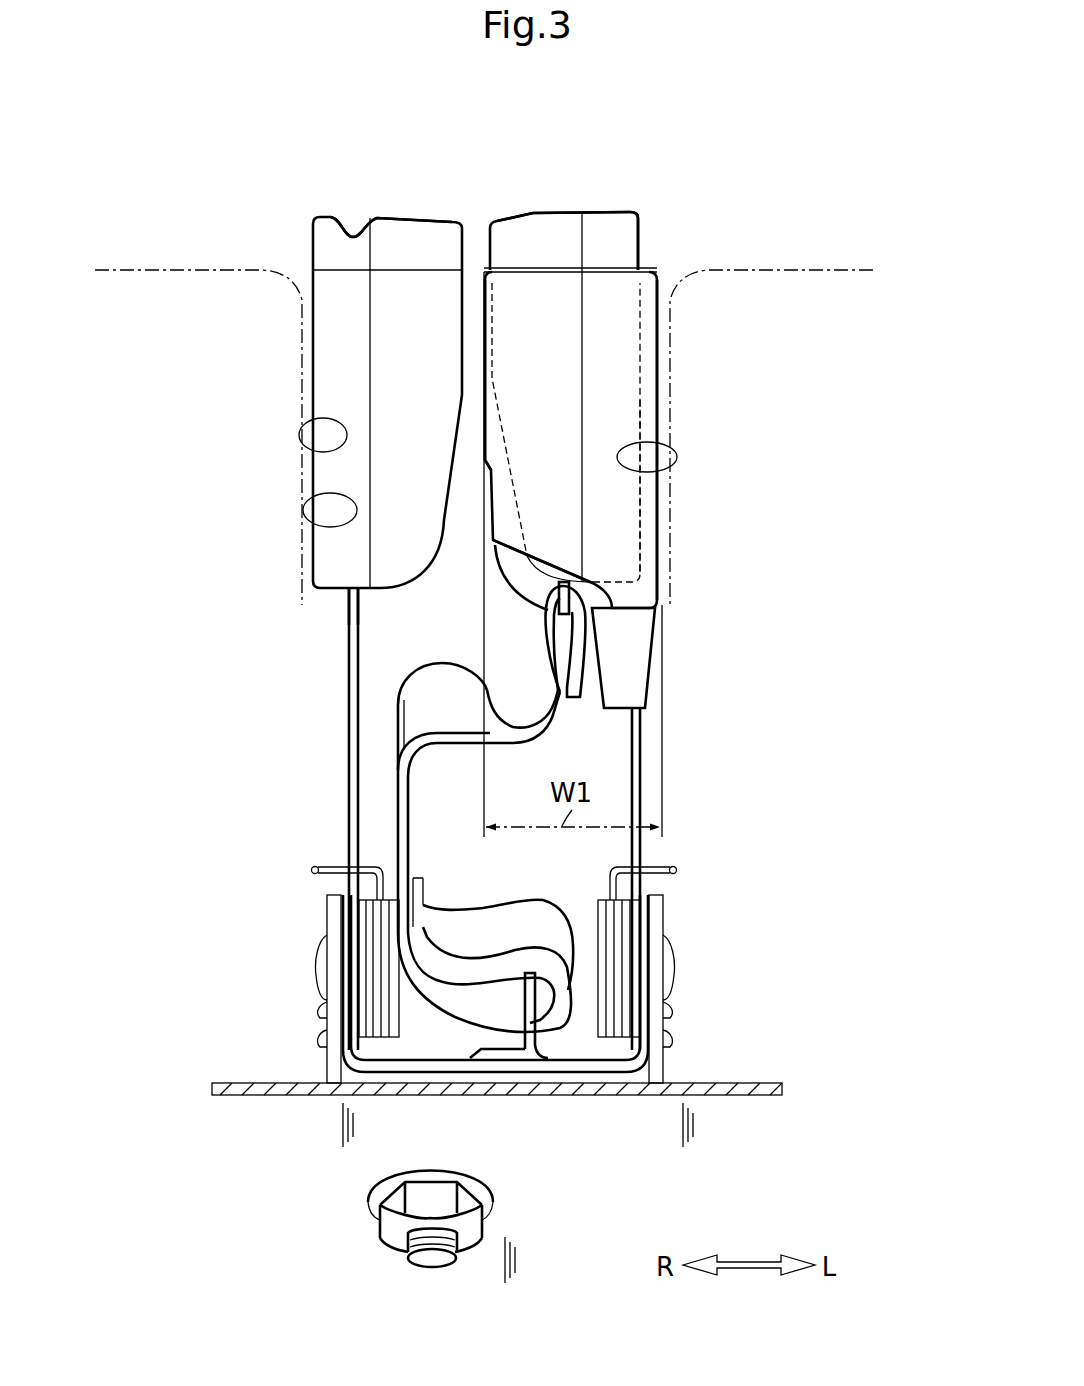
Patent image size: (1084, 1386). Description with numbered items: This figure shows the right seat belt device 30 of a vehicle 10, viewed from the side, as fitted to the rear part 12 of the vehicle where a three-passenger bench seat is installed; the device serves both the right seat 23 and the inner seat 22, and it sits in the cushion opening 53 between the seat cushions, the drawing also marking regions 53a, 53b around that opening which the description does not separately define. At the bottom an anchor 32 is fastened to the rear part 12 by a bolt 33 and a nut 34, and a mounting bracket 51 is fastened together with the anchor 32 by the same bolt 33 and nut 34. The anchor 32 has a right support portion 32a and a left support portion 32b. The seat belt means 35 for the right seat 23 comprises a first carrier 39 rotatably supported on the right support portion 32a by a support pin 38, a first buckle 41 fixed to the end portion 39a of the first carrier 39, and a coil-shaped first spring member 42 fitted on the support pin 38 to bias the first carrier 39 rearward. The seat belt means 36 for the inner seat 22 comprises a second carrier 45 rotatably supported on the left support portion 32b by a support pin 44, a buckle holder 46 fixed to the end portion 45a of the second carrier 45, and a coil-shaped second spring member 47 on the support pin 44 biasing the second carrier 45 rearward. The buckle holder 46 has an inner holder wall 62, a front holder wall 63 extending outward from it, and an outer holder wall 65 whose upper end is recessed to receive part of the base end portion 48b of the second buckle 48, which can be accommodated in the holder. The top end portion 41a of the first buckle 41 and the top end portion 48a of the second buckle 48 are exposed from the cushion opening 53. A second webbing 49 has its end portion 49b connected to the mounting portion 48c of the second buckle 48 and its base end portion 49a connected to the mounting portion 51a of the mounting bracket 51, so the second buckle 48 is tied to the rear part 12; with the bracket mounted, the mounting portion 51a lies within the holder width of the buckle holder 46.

The vehicle 10 is at (786, 150).
The right seat belt device 30 is at (628, 195).
The seat belt means 35 is at (360, 220).
The top end portion 41a is at (413, 236).
The top end portion 48a is at (556, 240).
The seat belt means 36 is at (645, 243).
The right seat 23 is at (205, 270).
The inner seat 22 is at (812, 270).
The outer holder wall 65 is at (487, 345).
The inner holder wall 62 is at (668, 330).
The second buckle 48 is at (645, 387).
The first buckle 41 is at (332, 377).
The buckle holder 46 is at (662, 430).
The cushion opening 53 is at (298, 452).
The thick wall portion 53a is at (303, 532).
The thick wall portion 53b is at (678, 459).
The front holder wall 63 is at (615, 485).
The mounting portion 48c is at (578, 598).
The base end portion 48b is at (520, 540).
The end portion 49b is at (583, 632).
The end portion 39a is at (345, 605).
The second webbing 49 is at (405, 685).
The end portion 45a is at (636, 730).
The first carrier 39 is at (350, 750).
The second carrier 45 is at (637, 800).
The base end portion 49a is at (540, 915).
The right support portion 32a is at (330, 905).
The left support portion 32b is at (655, 912).
The support pin 44 is at (670, 950).
The support pin 38 is at (320, 965).
The second spring member 47 is at (625, 997).
The first spring member 42 is at (365, 1000).
The mounting portion 51a is at (525, 990).
The rear part 12 is at (750, 1085).
The mounting bracket 51 is at (497, 1052).
The anchor 32 is at (600, 1065).
The nut 34 is at (385, 1225).
The bolt 33 is at (430, 1265).